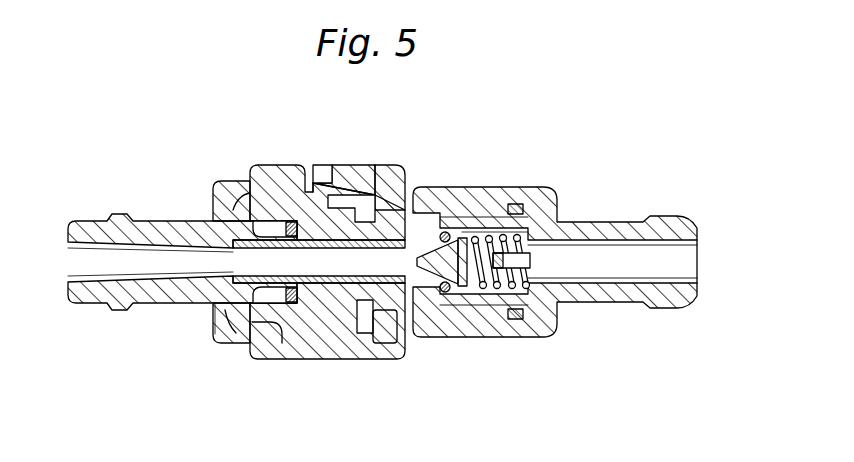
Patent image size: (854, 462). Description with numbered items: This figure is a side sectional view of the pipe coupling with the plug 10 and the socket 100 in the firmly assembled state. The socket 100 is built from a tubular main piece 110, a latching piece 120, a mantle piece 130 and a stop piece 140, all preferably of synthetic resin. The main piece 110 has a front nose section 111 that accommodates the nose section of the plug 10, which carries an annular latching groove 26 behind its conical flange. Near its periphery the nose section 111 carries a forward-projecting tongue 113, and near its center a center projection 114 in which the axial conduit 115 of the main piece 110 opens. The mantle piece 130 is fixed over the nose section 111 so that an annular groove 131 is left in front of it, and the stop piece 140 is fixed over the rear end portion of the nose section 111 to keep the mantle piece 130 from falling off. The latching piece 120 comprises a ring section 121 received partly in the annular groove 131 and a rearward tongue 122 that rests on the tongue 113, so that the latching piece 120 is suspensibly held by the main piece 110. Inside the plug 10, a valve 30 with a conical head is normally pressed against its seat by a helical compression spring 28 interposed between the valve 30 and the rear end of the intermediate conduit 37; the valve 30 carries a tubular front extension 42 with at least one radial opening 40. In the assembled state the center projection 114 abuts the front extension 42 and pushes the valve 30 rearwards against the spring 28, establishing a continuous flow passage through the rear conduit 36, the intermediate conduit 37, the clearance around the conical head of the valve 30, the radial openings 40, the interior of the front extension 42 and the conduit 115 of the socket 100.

The plug 10 is at (593, 203).
The annular latching groove 26 is at (406, 232).
The helical compression spring 28 is at (512, 320).
The valve 30 is at (452, 294).
The rear conduit 36 is at (620, 277).
The intermediate conduit 37 is at (497, 297).
The radial opening 40 is at (404, 256).
The front extension 42 is at (400, 300).
The socket 100 is at (193, 205).
The main piece 110 is at (182, 298).
The nose section 111 is at (247, 200).
The tongue 113 is at (347, 196).
The center projection 114 is at (277, 341).
The axial conduit 115 is at (84, 266).
The latching piece 120 is at (360, 177).
The ring section 121 is at (380, 322).
The tongue 122 is at (336, 191).
The mantle piece 130 is at (304, 360).
The annular groove 131 is at (359, 304).
The stop piece 140 is at (227, 344).